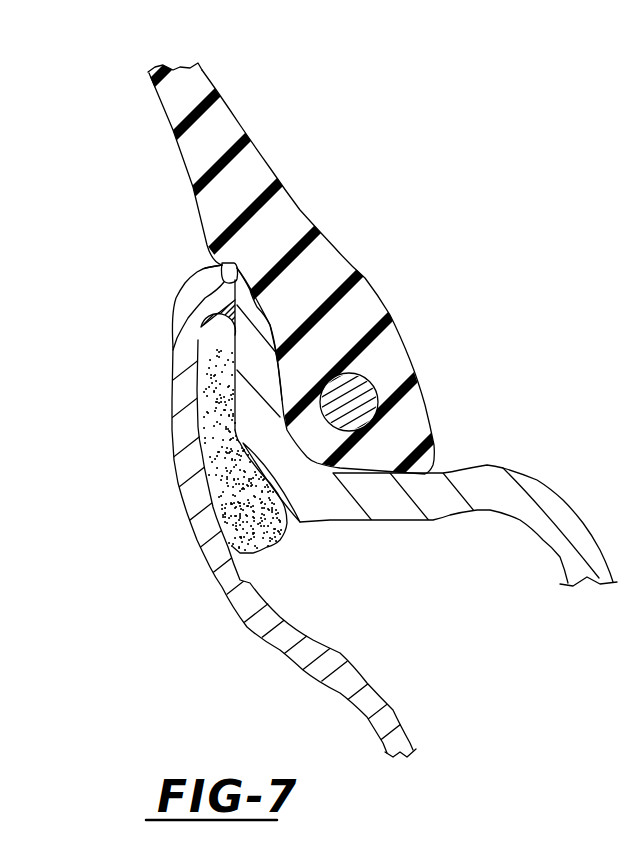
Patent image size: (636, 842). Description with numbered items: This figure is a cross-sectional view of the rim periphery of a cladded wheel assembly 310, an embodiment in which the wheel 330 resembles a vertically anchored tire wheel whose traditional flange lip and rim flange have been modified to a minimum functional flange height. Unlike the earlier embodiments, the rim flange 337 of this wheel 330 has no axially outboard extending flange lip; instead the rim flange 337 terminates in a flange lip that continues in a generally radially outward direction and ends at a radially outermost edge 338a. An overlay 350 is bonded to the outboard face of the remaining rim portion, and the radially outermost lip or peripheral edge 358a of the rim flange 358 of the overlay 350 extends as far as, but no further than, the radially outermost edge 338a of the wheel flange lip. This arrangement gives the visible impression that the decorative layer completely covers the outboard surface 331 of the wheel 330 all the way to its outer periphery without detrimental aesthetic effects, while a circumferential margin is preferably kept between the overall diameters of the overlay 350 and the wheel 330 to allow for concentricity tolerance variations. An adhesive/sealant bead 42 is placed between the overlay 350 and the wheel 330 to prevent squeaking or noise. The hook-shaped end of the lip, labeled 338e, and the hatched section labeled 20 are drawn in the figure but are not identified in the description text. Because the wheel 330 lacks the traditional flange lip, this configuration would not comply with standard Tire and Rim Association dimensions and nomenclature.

The panel 20 is at (187, 97).
The panel edge hook 338e is at (222, 264).
The radially outermost edge 338a is at (238, 263).
The peripheral edge 358a is at (220, 264).
The rim flange 358 is at (215, 280).
The adhesive/sealant bead 42 is at (203, 337).
The rim flange 337 is at (245, 405).
The outboard surface 331 is at (335, 523).
The overlay 350 is at (320, 690).
The wheel 330 is at (509, 460).
The cladded wheel assembly 310 is at (351, 480).